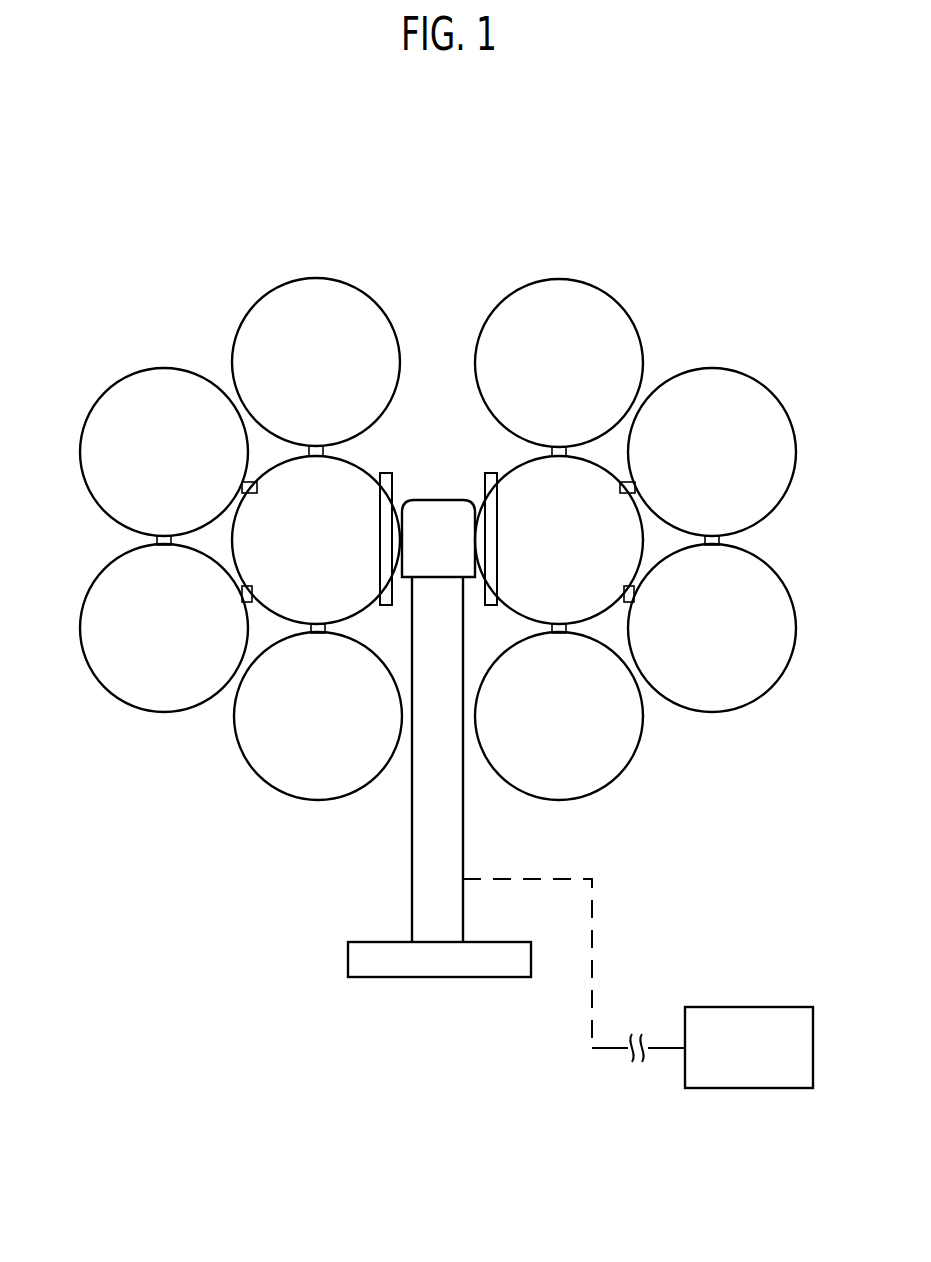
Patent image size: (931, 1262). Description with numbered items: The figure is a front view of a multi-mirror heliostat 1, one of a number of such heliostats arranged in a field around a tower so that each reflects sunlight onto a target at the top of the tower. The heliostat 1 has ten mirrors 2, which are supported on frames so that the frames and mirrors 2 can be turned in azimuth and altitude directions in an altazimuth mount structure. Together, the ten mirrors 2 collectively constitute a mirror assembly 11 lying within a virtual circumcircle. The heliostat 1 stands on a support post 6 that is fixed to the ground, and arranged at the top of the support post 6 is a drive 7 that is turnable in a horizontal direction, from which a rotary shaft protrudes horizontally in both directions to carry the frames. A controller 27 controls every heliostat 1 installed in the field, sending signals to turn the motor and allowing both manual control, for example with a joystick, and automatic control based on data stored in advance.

The multi-mirror heliostat 1 is at (146, 794).
The mirror assembly 11 is at (192, 330).
The mirror 2 is at (690, 405).
The drive 7 is at (447, 500).
The support post 6 is at (412, 842).
The controller 27 is at (638, 983).